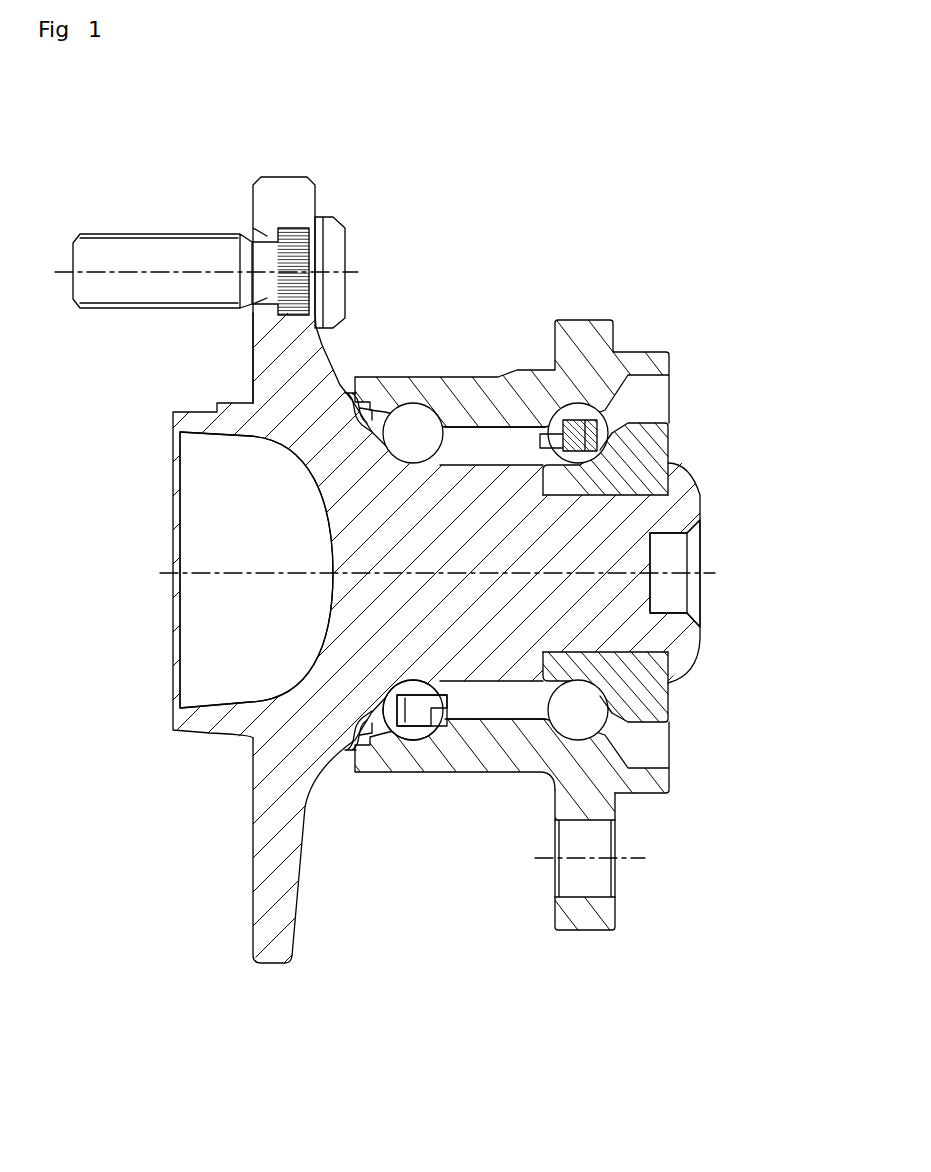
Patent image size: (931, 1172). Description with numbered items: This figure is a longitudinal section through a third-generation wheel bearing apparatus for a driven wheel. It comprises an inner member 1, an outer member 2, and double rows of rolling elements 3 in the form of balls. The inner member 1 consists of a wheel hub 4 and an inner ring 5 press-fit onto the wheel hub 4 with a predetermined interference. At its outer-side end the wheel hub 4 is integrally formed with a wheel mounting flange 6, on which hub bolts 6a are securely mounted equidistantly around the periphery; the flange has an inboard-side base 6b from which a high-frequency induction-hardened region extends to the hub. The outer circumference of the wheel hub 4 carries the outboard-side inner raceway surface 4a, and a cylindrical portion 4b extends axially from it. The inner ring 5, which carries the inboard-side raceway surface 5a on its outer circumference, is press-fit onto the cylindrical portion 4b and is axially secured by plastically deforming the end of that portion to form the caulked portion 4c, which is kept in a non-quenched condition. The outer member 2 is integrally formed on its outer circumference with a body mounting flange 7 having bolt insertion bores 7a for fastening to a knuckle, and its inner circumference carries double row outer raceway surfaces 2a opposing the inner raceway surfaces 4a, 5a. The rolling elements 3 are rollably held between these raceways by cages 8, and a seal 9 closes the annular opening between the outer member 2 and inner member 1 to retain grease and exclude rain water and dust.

The inner member 1 is at (298, 491).
The outer member 2 is at (478, 393).
The outer raceway surface 2a is at (412, 437).
The rolling element 3 is at (563, 730).
The wheel hub 4 is at (318, 474).
The inner raceway surface 4a is at (412, 443).
The cylindrical portion 4b is at (612, 483).
The caulked portion 4c is at (682, 487).
The inner ring 5 is at (635, 452).
The raceway surface 5a is at (572, 450).
The wheel mounting flange 6 is at (290, 190).
The hub bolt 6a is at (183, 258).
The inboard-side base 6b is at (253, 377).
The body mounting flange 7 is at (578, 935).
The bolt insertion bore 7a is at (568, 905).
The cage 8 is at (537, 657).
The seal 9 is at (348, 732).